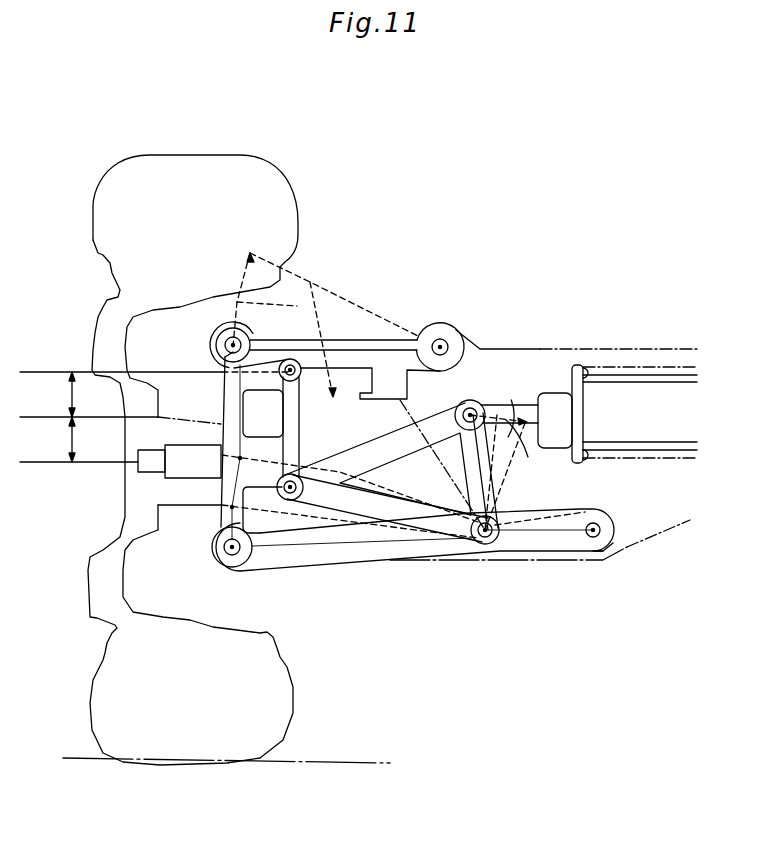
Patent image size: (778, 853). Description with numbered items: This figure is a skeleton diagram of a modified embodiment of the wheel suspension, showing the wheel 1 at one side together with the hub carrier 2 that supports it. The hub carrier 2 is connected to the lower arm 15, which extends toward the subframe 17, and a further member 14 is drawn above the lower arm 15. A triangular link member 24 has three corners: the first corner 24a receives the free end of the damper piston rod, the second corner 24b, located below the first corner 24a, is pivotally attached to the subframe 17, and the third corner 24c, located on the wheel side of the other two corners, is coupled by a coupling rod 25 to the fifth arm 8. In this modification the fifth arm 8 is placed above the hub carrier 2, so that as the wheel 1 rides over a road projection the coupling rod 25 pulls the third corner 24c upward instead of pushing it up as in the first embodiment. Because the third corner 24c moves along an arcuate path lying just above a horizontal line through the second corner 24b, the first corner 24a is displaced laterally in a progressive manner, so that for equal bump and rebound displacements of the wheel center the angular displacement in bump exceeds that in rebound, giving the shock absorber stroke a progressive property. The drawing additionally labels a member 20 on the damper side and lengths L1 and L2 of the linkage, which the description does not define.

The wheel 1 is at (297, 203).
The hub carrier 2 is at (217, 483).
The fifth arm 8 is at (273, 353).
The upper arm 14 is at (373, 340).
The lower arm 15 is at (427, 557).
The subframe 17 is at (535, 345).
The steering rack housing 20 is at (642, 377).
The triangular link member 24 is at (365, 445).
The first corner 24a is at (463, 403).
The second corner 24b is at (487, 545).
The third corner 24c is at (289, 500).
The coupling rod 25 is at (300, 412).
The link length L1 is at (497, 488).
The link length L2 is at (365, 505).